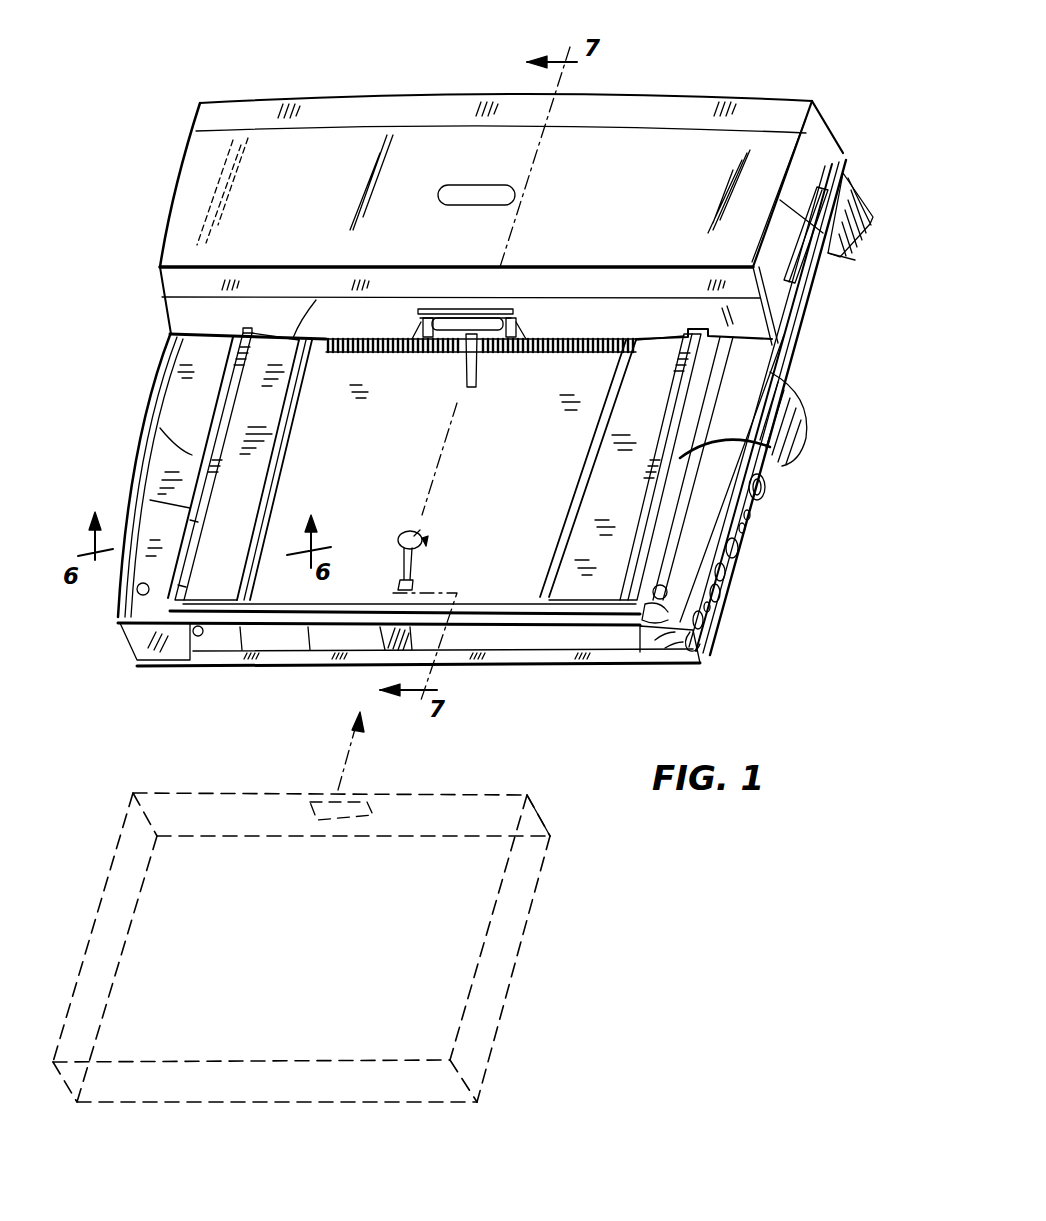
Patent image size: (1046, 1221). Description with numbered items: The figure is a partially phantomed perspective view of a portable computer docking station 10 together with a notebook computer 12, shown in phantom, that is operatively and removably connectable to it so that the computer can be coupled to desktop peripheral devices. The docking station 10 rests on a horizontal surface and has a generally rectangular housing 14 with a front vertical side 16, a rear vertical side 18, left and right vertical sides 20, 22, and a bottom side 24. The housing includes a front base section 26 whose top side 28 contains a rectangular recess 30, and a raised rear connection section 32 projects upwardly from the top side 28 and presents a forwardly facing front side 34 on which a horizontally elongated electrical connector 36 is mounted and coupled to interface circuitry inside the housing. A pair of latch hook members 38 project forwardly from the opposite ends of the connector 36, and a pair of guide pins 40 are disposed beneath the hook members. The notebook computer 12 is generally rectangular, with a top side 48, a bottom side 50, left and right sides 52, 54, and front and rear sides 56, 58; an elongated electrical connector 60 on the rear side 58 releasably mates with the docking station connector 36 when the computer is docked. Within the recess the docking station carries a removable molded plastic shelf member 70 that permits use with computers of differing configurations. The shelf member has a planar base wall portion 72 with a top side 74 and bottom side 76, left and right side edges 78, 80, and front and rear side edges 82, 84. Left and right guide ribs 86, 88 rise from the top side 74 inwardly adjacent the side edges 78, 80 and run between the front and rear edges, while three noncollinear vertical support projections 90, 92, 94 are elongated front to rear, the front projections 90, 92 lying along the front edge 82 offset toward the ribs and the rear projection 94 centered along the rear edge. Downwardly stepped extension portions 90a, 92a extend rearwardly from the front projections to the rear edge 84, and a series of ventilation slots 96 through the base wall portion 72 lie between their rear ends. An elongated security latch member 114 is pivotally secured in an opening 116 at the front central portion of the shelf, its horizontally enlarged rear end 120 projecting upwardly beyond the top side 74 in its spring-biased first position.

The docking station 10 is at (745, 78).
The notebook computer 12 is at (540, 940).
The housing 14 is at (822, 318).
The front vertical side 16 is at (660, 652).
The rear vertical side 18 is at (840, 160).
The left vertical side 20 is at (122, 640).
The right vertical side 22 is at (745, 548).
The bottom side 24 is at (542, 667).
The front base section 26 is at (140, 474).
The top side 28 is at (160, 430).
The rectangular recess 30 is at (172, 588).
The raised rear connection section 32 is at (176, 200).
The front side 34 is at (680, 326).
The electrical connector 36 is at (460, 309).
The latch hook members 38 is at (425, 318).
The guide pins 40 is at (415, 338).
The top side 48 is at (298, 1045).
The bottom side 50 is at (297, 1105).
The left side 52 is at (100, 880).
The right side 54 is at (492, 992).
The front side 56 is at (388, 1090).
The rear side 58 is at (545, 815).
The electrical connector 60 is at (382, 795).
The shelf member 70 is at (474, 462).
The base wall portion 72 is at (672, 490).
The top side 74 is at (512, 511).
The bottom side 76 is at (318, 655).
The left side edge 78 is at (150, 500).
The right side edge 80 is at (660, 530).
The front side edge 82 is at (238, 628).
The rear side edge 84 is at (316, 300).
The left guide rib 86 is at (237, 400).
The right guide rib 88 is at (680, 395).
The left front support projection 90 is at (262, 565).
The extension portion 90a is at (300, 436).
The right front support projection 92 is at (560, 572).
The extension portion 92a is at (597, 455).
The rear support projection 94 is at (466, 365).
The ventilation slots 96 is at (378, 355).
The security latch member 114 is at (408, 532).
The opening 116 is at (415, 564).
The rear end 120 is at (403, 538).